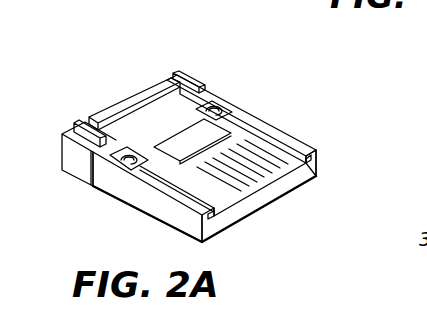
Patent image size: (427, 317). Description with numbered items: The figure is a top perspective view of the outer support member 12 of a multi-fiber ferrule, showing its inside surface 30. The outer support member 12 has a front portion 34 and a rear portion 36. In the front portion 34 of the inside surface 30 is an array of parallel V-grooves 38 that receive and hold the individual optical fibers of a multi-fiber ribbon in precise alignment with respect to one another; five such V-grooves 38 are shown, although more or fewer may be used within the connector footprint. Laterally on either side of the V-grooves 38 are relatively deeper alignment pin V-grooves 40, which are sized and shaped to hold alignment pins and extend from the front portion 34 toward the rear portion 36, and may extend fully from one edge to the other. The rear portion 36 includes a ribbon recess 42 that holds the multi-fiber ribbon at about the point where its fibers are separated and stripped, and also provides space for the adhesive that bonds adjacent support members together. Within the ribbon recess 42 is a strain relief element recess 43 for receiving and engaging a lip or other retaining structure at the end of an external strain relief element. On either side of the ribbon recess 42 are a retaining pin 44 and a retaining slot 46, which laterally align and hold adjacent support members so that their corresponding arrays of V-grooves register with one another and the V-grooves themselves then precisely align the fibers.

The outer support member 12 is at (161, 57).
The inside surface 30 is at (208, 89).
The front portion 34 is at (301, 127).
The rear portion 36 is at (63, 179).
The V-grooves 38 is at (265, 185).
The alignment pin V-grooves 40 is at (215, 220).
The ribbon recess 42 is at (146, 113).
The strain relief element recess 43 is at (160, 136).
The retaining pin 44 is at (82, 125).
The retaining slot 46 is at (189, 75).